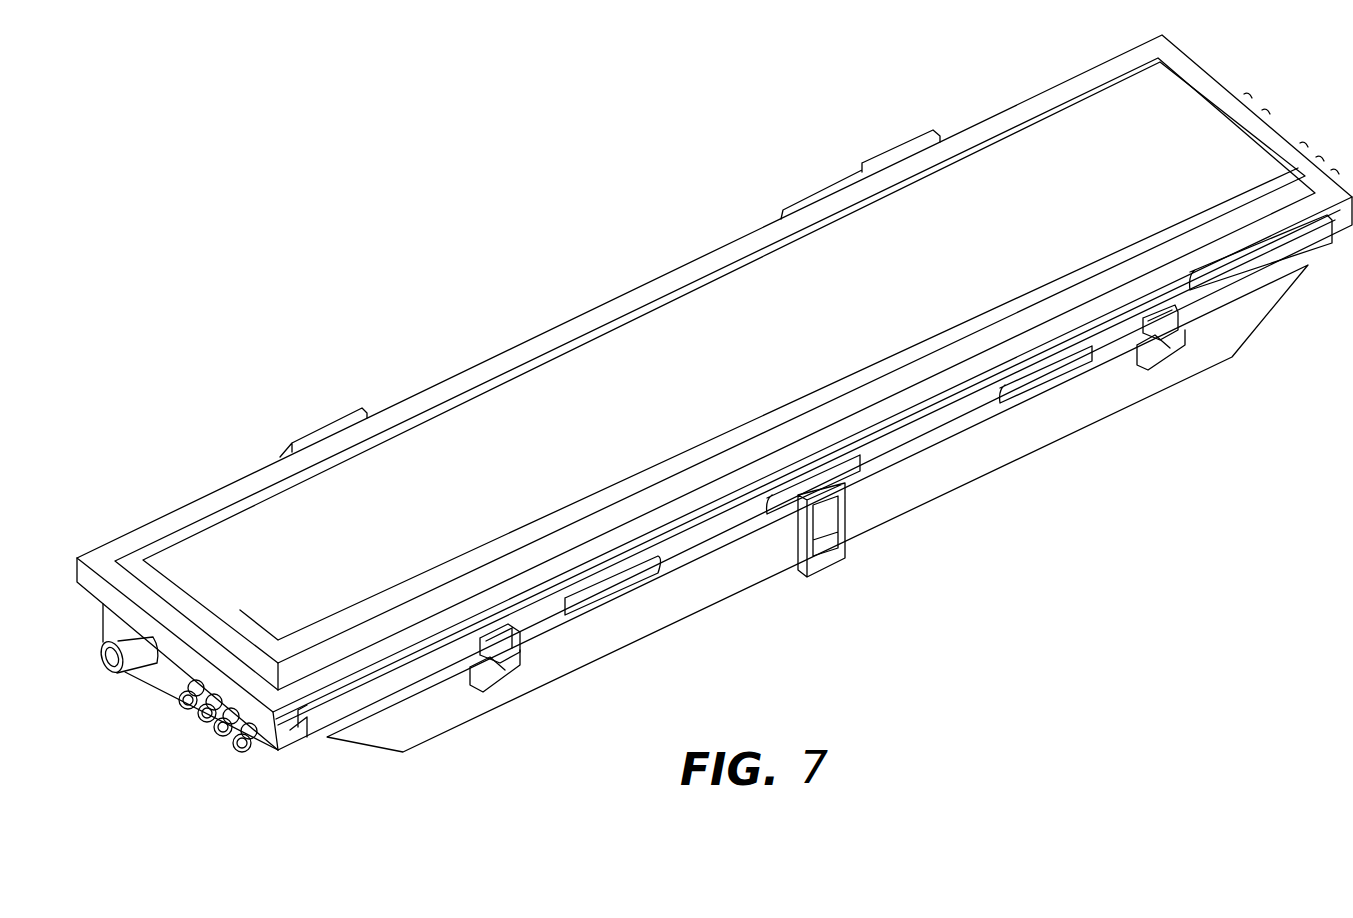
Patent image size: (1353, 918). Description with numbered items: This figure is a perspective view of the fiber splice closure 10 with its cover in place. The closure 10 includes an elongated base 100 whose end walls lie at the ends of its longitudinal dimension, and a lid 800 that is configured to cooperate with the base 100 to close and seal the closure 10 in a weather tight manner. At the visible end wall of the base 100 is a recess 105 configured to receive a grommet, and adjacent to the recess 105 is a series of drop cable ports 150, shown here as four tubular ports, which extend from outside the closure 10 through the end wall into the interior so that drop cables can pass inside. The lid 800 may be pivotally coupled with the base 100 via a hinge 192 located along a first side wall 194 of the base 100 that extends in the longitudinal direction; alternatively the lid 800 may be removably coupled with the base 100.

The fiber splice closure 10 is at (432, 229).
The elongated base 100 is at (478, 706).
The recess 105 is at (151, 680).
The drop cable ports 150 is at (236, 737).
The hinge 192 is at (336, 407).
The first side wall 194 is at (619, 296).
The lid 800 is at (772, 359).